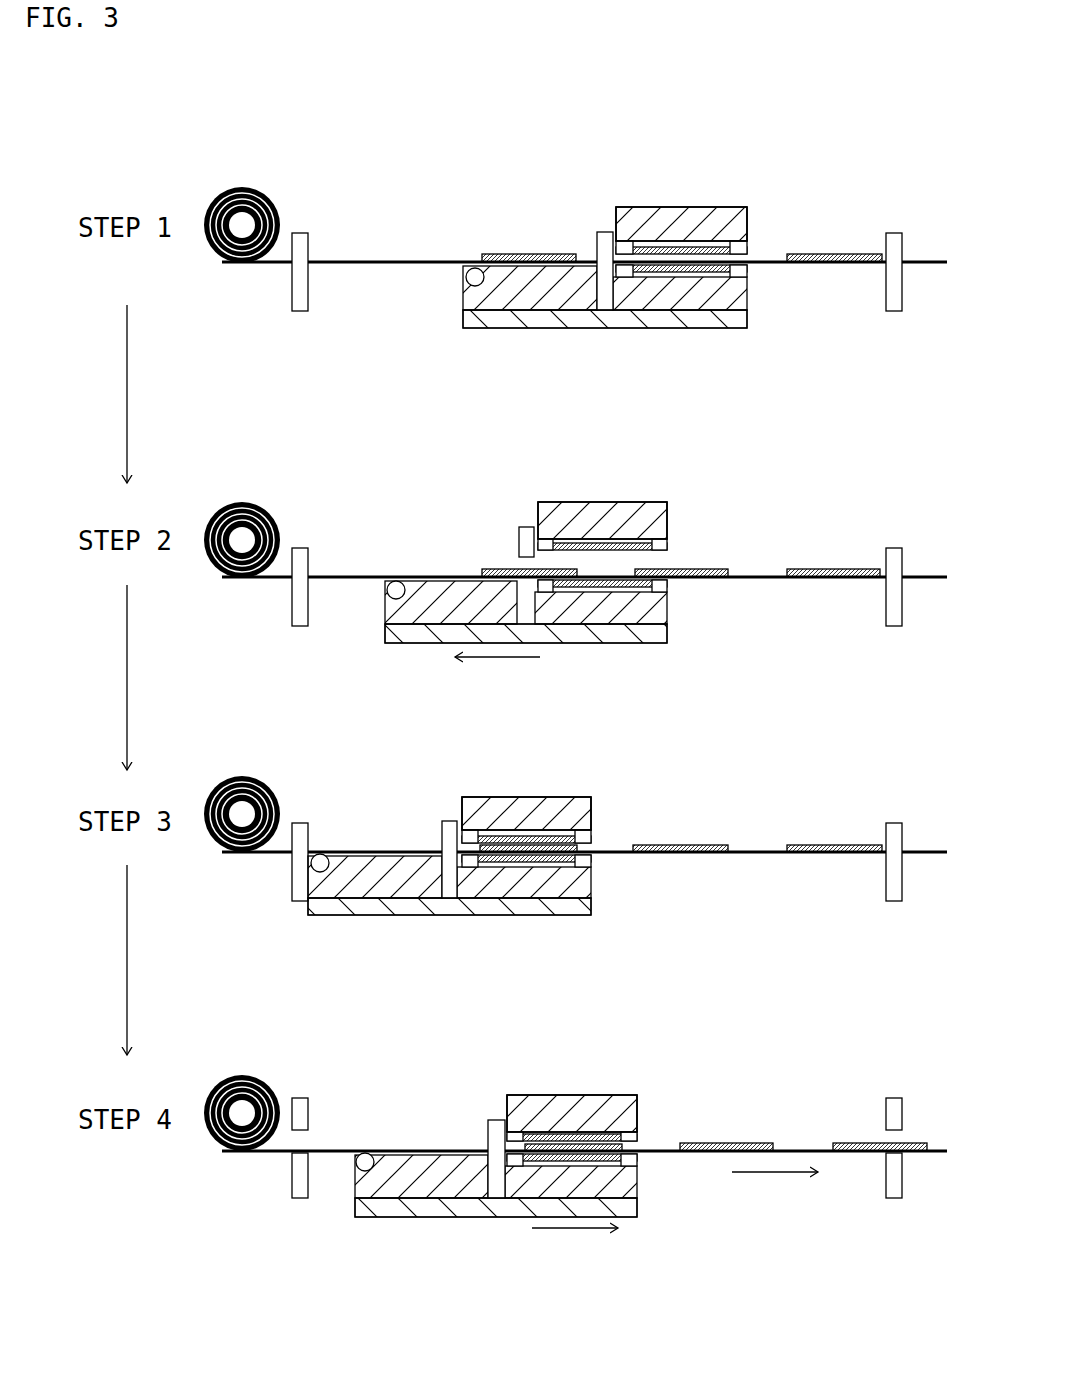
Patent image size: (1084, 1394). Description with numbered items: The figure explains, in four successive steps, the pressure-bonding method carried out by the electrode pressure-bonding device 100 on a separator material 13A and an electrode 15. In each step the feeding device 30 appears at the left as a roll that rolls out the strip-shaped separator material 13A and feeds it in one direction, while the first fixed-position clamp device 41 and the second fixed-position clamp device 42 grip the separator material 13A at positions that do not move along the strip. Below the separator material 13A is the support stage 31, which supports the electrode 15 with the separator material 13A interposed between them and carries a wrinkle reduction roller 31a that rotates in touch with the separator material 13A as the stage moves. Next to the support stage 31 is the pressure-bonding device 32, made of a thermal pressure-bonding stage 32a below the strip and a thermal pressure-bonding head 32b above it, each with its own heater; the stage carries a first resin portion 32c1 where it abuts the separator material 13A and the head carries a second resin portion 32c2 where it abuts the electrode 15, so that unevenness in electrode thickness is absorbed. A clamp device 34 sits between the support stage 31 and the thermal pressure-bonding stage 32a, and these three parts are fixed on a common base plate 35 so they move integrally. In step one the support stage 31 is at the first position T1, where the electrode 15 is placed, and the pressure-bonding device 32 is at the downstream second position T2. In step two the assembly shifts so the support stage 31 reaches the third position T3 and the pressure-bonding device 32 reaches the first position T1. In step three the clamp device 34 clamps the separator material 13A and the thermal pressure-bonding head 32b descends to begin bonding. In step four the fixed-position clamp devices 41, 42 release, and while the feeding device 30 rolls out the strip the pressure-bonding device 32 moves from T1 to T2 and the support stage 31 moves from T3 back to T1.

The electrode pressure-bonding device 100 is at (641, 147).
The separator material 13A is at (370, 258).
The electrode 15 is at (537, 254).
The feeding device 30 is at (243, 182).
The support stage 31 is at (463, 303).
The wrinkle reduction roller 31a is at (466, 277).
The pressure-bonding device 32 is at (693, 195).
The thermal pressure-bonding stage 32a is at (747, 300).
The thermal pressure-bonding head 32b is at (747, 215).
The first resin portion 32c1 is at (747, 272).
The second resin portion 32c2 is at (747, 249).
The clamp device 34 is at (605, 232).
The base plate 35 is at (485, 329).
The first fixed-position clamp device 41 is at (300, 232).
The second fixed-position clamp device 42 is at (893, 233).
The first position T1 is at (528, 333).
The second position T2 is at (680, 333).
The third position T3 is at (377, 922).